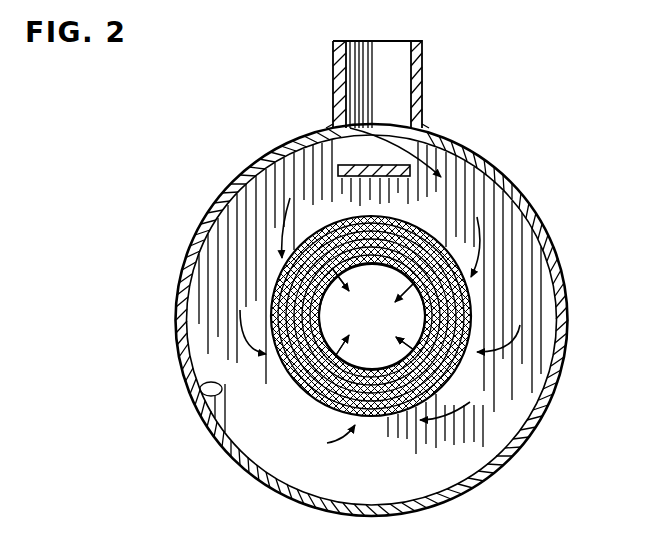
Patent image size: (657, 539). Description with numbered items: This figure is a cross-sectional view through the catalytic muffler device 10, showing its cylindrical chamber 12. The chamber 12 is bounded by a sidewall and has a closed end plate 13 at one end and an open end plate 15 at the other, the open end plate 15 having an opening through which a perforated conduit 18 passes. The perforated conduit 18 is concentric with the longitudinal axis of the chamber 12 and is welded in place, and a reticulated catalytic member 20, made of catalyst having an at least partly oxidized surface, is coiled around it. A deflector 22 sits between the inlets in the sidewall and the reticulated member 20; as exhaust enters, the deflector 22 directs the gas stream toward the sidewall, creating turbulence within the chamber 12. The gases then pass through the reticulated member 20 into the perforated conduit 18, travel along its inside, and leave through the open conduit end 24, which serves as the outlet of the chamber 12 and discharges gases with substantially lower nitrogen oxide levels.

The catalytic muffler device 10 is at (171, 326).
The cylindrical chamber 12 is at (252, 477).
The closed end plate 13 is at (224, 392).
The open end plate 15 is at (423, 77).
The perforated conduit 18 is at (298, 390).
The reticulated catalytic member 20 is at (407, 417).
The deflector 22 is at (325, 164).
The open conduit end 24 is at (387, 301).